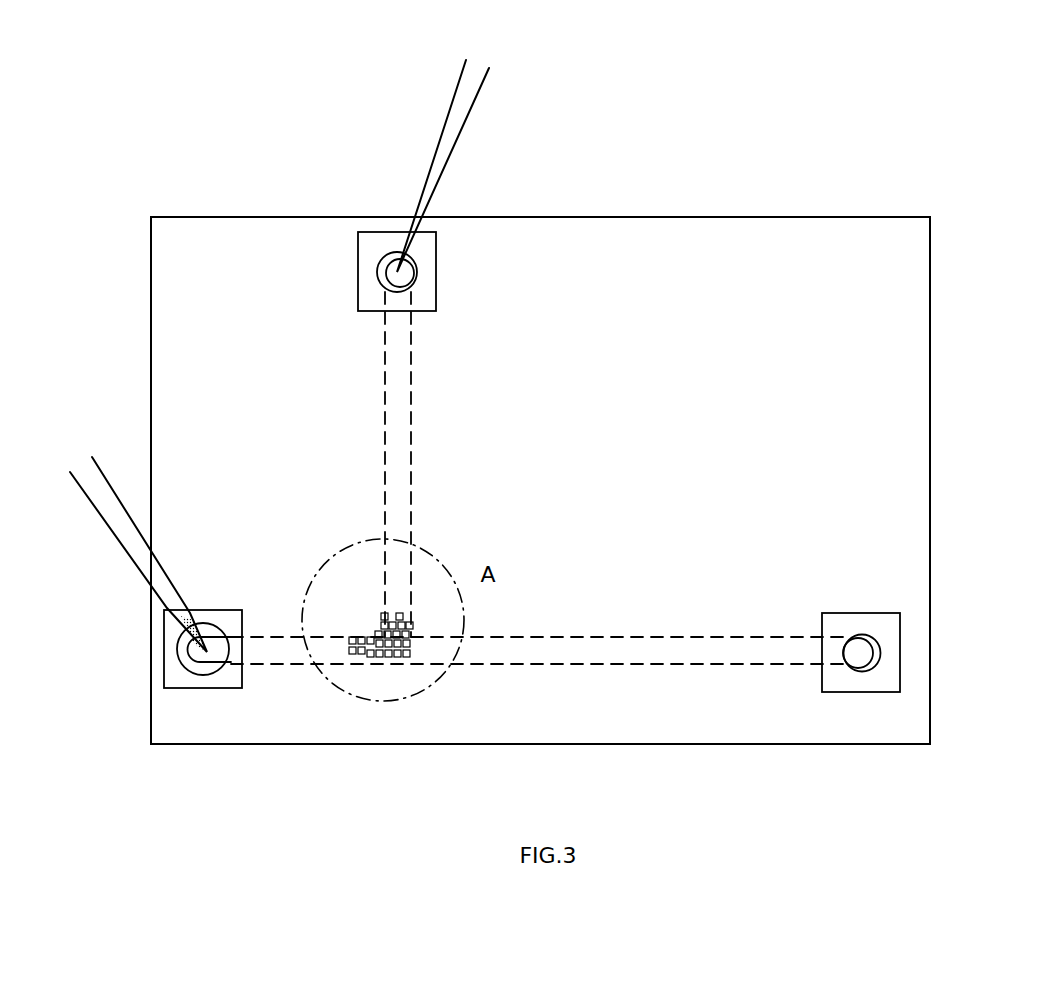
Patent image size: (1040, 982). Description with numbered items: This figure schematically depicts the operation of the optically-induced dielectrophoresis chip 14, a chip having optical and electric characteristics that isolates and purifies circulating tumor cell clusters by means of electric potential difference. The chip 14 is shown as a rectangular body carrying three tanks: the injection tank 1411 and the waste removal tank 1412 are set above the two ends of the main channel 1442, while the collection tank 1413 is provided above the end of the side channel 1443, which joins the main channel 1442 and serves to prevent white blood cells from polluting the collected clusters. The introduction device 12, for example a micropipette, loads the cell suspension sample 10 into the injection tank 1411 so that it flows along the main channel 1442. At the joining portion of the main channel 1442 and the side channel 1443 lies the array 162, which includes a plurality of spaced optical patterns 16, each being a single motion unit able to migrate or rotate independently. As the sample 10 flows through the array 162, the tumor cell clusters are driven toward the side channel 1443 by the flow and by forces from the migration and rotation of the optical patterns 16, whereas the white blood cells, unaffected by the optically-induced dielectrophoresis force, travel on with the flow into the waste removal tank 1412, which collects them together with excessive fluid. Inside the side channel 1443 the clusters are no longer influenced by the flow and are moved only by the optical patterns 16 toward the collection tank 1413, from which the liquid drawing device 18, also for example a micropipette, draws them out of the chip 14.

The optically-induced dielectrophoresis chip 14 is at (958, 412).
The injection tank 1411 is at (177, 677).
The waste removal tank 1412 is at (883, 627).
The collection tank 1413 is at (423, 252).
The main channel 1442 is at (578, 647).
The side channel 1443 is at (393, 372).
The introduction device 12 is at (118, 515).
The liquid drawing device 18 is at (443, 143).
The cell suspension sample 10 is at (183, 632).
The optical pattern 16 is at (410, 657).
The array 162 is at (362, 686).